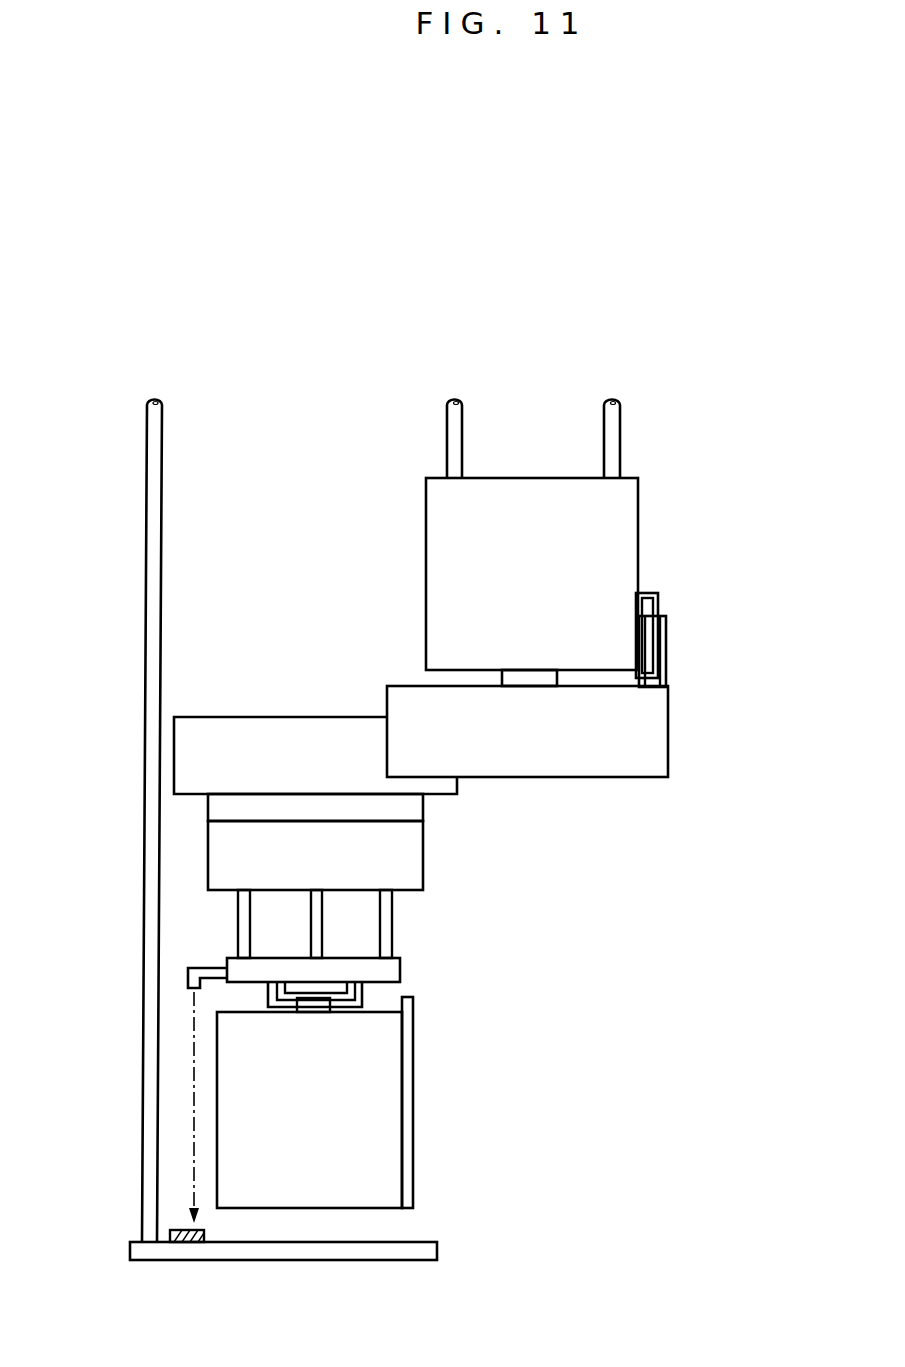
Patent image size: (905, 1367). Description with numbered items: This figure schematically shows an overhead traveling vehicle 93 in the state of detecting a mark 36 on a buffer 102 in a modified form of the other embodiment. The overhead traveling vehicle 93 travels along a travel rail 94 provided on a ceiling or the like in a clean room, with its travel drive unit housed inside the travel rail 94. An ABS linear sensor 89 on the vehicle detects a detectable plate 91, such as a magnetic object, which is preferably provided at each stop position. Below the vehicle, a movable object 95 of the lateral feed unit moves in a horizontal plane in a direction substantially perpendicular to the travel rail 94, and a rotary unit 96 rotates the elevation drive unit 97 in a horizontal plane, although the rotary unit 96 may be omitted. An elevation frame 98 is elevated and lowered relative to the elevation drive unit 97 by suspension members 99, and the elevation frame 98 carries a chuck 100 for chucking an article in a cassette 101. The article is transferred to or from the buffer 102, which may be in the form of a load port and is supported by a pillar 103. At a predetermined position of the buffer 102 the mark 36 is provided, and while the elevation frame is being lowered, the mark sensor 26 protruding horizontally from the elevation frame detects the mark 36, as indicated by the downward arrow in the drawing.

The mark sensor 26 is at (188, 983).
The mark 36 is at (182, 1242).
The ABS linear sensor 89 is at (666, 655).
The detectable plate 91 is at (658, 600).
The overhead traveling vehicle 93 is at (668, 733).
The travel rail 94 is at (622, 530).
The movable object 95 is at (275, 728).
The rotary unit 96 is at (410, 808).
The elevation drive unit 97 is at (405, 856).
The elevation frame 98 is at (404, 961).
The suspension members 99 is at (250, 937).
The chuck 100 is at (403, 991).
The cassette 101 is at (414, 1100).
The buffer 102 is at (390, 1260).
The pillar 103 is at (142, 874).